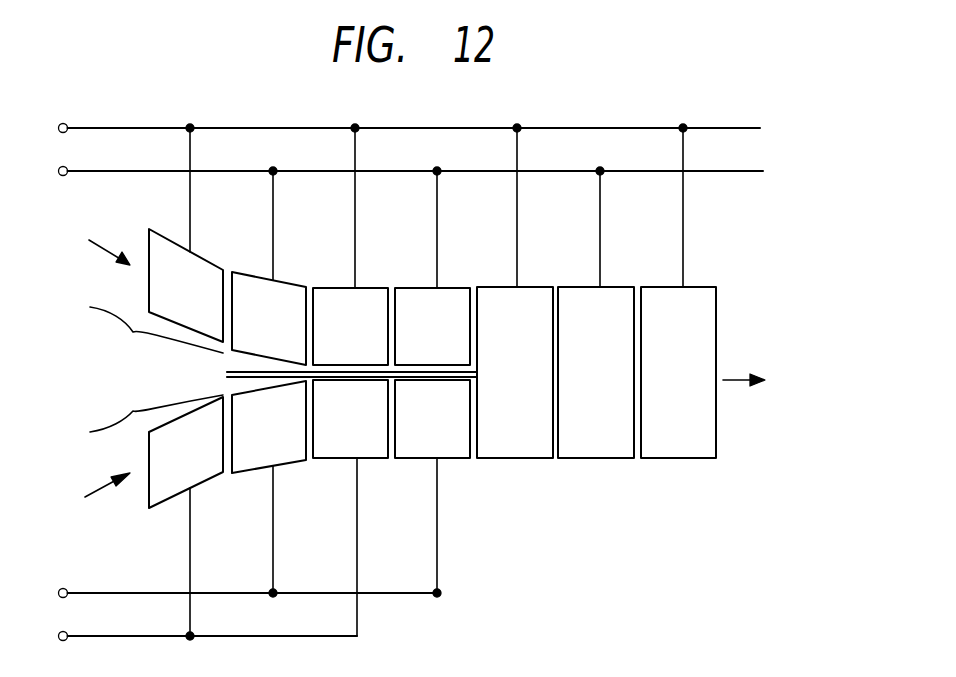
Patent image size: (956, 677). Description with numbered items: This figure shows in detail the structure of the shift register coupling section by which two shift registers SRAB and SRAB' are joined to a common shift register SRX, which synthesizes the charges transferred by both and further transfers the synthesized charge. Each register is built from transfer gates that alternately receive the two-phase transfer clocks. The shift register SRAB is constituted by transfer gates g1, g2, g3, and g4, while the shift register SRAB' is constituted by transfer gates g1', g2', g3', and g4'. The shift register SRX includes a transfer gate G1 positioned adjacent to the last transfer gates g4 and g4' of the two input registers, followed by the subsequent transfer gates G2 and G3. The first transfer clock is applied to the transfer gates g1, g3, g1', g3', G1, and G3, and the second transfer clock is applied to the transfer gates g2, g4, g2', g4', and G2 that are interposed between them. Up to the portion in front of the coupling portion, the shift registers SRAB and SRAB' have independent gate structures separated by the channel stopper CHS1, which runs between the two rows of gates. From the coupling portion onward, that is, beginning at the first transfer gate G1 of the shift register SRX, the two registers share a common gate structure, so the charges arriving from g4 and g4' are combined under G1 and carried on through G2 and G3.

The shift register SRAB' is at (149, 301).
The shift register SRAB is at (153, 440).
The transfer gate g1' is at (186, 285).
The transfer gate g2' is at (269, 318).
The transfer gate g3' is at (350, 326).
The transfer gate g4' is at (432, 326).
The transfer gate g1 is at (186, 452).
The transfer gate g2 is at (269, 427).
The transfer gate g3 is at (350, 419).
The transfer gate g4 is at (432, 419).
The channel stopper CHS1 is at (227, 373).
The shift register SRX is at (477, 467).
The transfer gate G1 is at (515, 372).
The transfer gate G2 is at (596, 372).
The transfer gate G3 is at (678, 372).